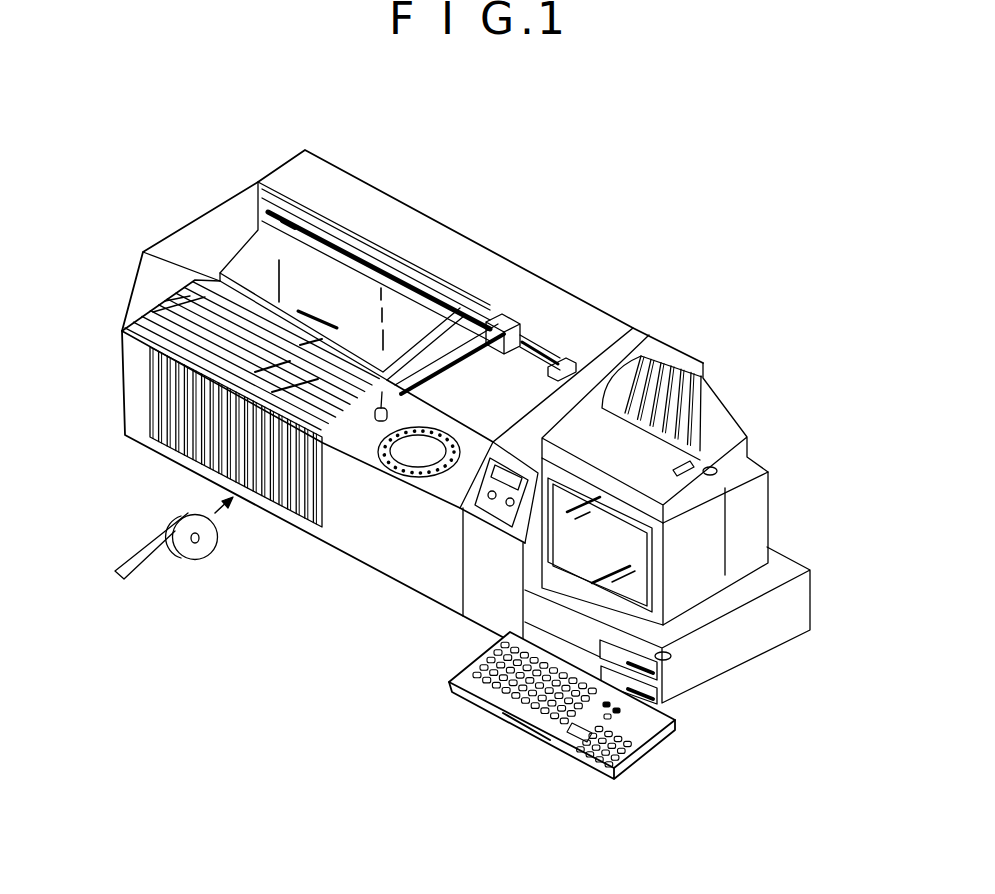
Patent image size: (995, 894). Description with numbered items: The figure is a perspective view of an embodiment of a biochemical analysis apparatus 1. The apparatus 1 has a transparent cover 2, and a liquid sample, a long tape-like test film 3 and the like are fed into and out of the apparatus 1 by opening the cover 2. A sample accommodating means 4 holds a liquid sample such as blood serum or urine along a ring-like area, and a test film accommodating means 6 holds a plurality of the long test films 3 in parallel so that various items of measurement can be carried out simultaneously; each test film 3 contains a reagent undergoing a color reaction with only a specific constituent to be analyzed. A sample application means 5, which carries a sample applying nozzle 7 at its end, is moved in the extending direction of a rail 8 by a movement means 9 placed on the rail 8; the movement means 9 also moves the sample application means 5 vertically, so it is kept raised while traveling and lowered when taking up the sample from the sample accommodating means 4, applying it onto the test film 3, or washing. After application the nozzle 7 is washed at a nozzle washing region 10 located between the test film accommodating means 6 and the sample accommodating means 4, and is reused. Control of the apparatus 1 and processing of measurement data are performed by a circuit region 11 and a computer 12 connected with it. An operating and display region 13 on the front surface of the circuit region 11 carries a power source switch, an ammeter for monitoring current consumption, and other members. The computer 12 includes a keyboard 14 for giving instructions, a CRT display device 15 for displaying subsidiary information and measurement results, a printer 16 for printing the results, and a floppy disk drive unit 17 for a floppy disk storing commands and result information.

The biochemical analysis apparatus 1 is at (500, 205).
The transparent cover 2 is at (220, 222).
The long tape-like test film 3 is at (163, 524).
The sample accommodating means 4 is at (458, 440).
The sample application means 5 is at (500, 262).
The test film accommodating means 6 is at (302, 266).
The sample applying nozzle 7 is at (367, 408).
The rail 8 is at (552, 345).
The movement means 9 is at (515, 325).
The nozzle washing region 10 is at (380, 424).
The circuit region 11 is at (490, 580).
The computer 12 is at (790, 440).
The operating and display region 13 is at (483, 503).
The keyboard 14 is at (466, 693).
The CRT display device 15 is at (660, 562).
The printer 16 is at (703, 430).
The floppy disk drive unit 17 is at (671, 658).